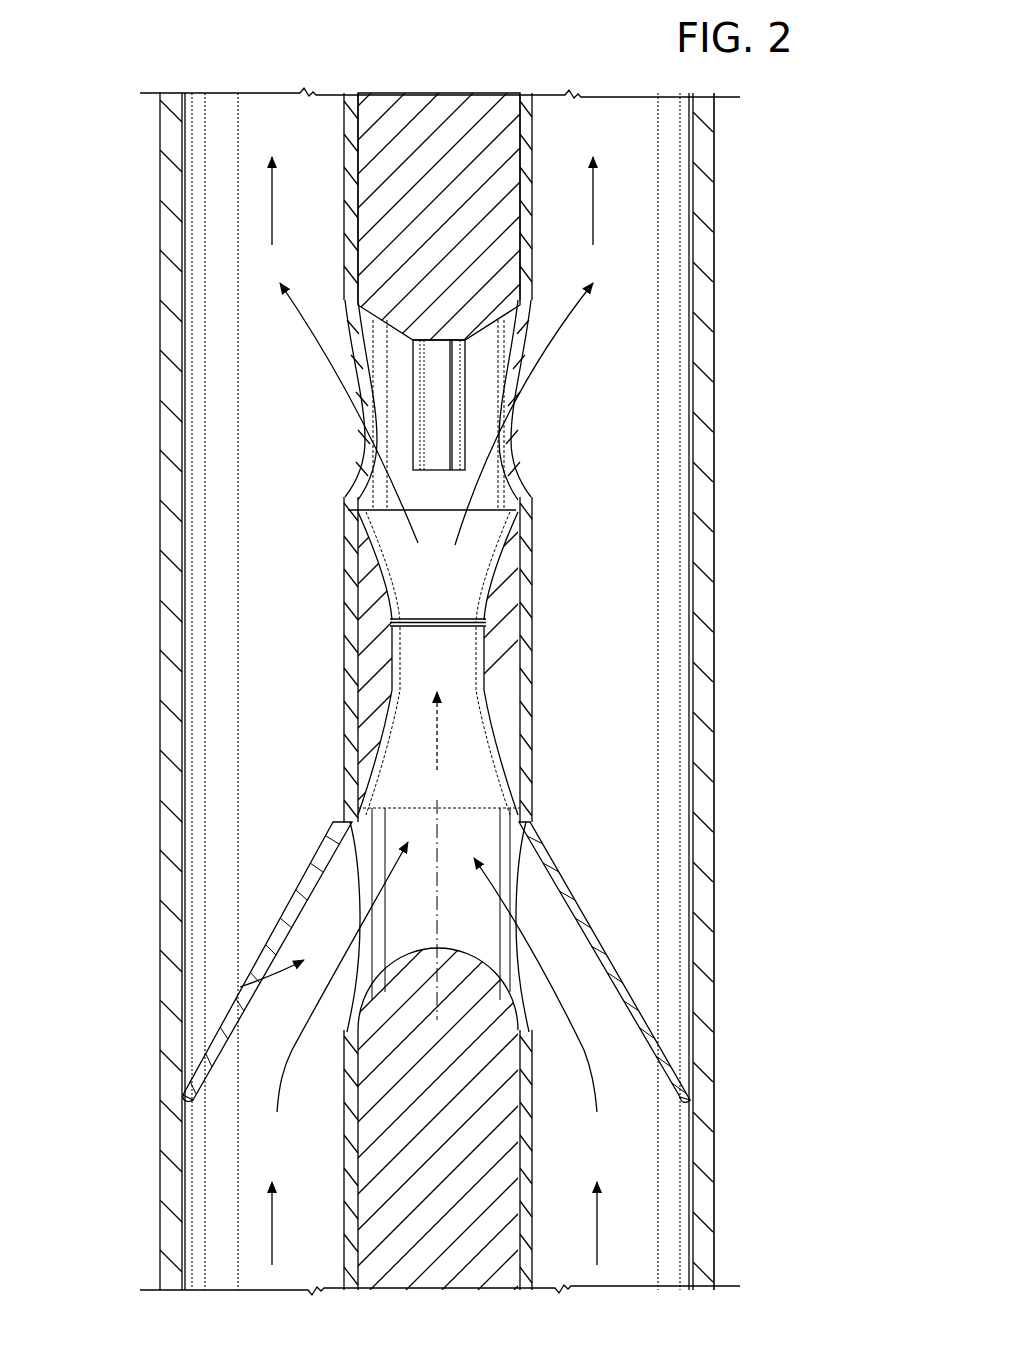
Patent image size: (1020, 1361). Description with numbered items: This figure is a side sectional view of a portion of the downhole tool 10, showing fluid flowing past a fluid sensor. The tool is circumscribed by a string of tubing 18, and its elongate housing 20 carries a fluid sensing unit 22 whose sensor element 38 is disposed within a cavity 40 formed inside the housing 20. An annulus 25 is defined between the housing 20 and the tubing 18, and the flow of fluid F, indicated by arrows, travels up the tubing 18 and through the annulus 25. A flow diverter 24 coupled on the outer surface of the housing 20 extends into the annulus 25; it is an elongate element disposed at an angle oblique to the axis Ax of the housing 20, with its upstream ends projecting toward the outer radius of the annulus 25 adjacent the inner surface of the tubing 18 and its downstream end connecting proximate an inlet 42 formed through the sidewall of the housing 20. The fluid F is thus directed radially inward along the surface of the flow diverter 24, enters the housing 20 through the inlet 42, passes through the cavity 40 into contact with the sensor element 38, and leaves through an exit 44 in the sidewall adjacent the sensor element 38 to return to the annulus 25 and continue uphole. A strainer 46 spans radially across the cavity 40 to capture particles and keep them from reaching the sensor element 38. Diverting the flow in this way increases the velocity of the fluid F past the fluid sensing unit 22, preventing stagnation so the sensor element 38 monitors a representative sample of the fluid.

The downhole tool 10 is at (630, 300).
The tubing 18 is at (160, 240).
The housing 20 is at (348, 273).
The fluid sensing unit 22 is at (556, 522).
The flow diverter 24 is at (612, 965).
The annulus 25 is at (255, 435).
The sensor element 38 is at (455, 400).
The cavity 40 is at (435, 580).
The inlet 42 is at (250, 980).
The exit 44 is at (330, 476).
The strainer 46 is at (448, 633).
The axis Ax is at (440, 880).
The fluid F is at (285, 1060).